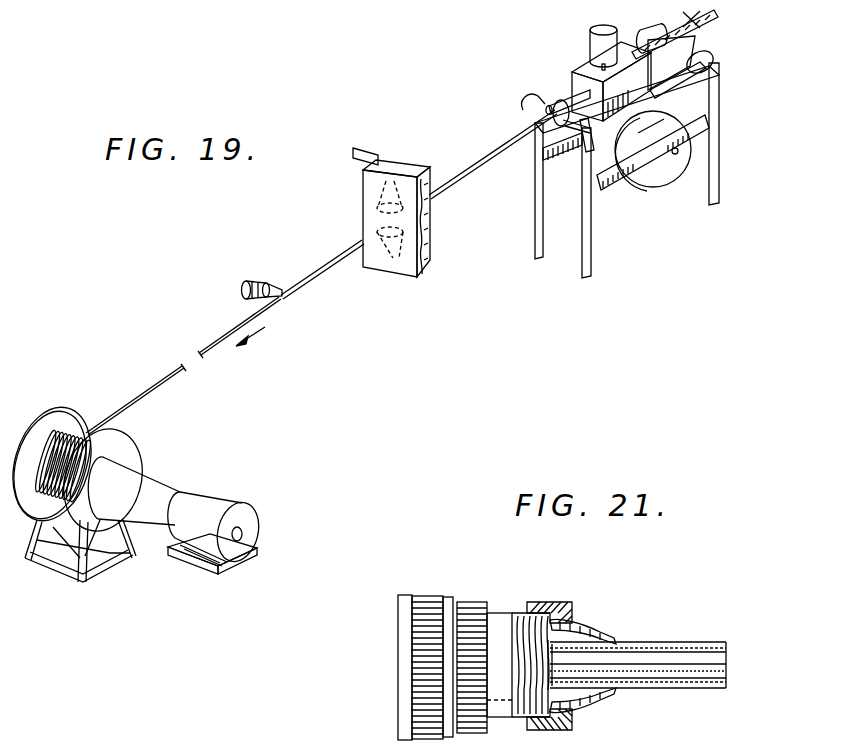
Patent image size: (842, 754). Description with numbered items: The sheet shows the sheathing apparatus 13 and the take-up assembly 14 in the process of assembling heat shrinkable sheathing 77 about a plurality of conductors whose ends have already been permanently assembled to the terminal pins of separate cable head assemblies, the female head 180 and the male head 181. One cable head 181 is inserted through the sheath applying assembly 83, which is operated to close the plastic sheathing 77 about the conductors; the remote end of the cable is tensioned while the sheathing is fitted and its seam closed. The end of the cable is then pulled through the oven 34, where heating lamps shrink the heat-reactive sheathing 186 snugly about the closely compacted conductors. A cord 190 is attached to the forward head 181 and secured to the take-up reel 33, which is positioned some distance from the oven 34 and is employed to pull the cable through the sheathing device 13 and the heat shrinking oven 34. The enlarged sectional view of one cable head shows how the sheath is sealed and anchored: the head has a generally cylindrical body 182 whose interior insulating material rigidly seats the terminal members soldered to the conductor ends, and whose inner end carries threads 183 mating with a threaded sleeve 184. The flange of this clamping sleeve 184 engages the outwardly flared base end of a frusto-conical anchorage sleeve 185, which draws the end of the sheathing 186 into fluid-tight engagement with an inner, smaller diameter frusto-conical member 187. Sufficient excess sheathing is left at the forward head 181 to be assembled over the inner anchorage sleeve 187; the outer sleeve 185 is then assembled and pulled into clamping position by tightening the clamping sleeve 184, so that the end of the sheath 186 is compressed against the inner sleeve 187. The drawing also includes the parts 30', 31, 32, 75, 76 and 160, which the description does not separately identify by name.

In FIG. 19, the cable sheathing assembly 13 is at (663, 236).
In FIG. 19, the cable take-up unit 14 is at (61, 583).
In FIG. 19, the tube 30' is at (695, 34).
In FIG. 21, the tube 30' is at (645, 646).
In FIG. 19, the motor 31 is at (220, 496).
In FIG. 19, the funnel 32 is at (158, 478).
In FIG. 19, the take-up reel 33 is at (125, 432).
In FIG. 19, the oven 34 is at (396, 276).
In FIG. 19, the upright post 75 is at (712, 131).
In FIG. 19, the wheel 76 is at (648, 174).
In FIG. 19, the heat shrinkable sheathing 77 is at (690, 69).
In FIG. 19, the sheath applying assembly 83 is at (572, 60).
In FIG. 19, the guide ring 160 is at (545, 94).
In FIG. 21, the female head 180 is at (468, 593).
In FIG. 19, the male head 181 is at (258, 271).
In FIG. 21, the cylindrical body 182 is at (492, 610).
In FIG. 21, the threads 183 is at (518, 612).
In FIG. 21, the threaded sleeve 184 is at (556, 606).
In FIG. 21, the frusto-conical anchorage sleeve 185 is at (588, 626).
In FIG. 19, the sheathing 186 is at (477, 150).
In FIG. 21, the sheathing 186 is at (652, 642).
In FIG. 21, the inner frusto-conical member 187 is at (598, 706).
In FIG. 19, the cord 190 is at (157, 384).